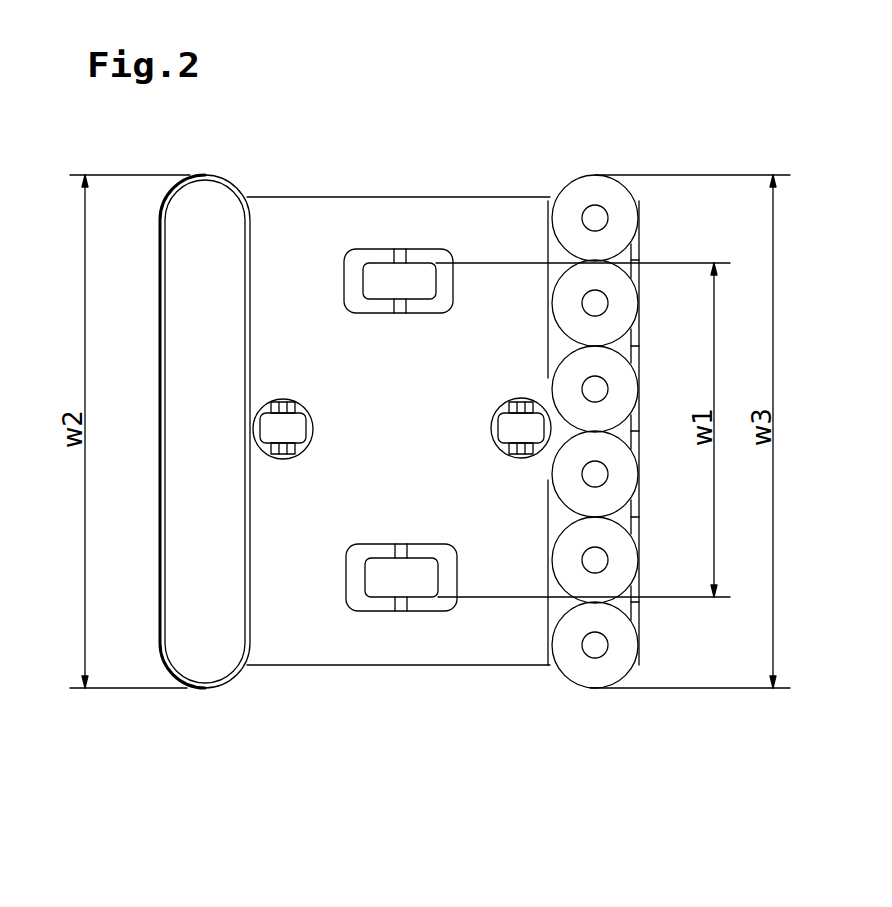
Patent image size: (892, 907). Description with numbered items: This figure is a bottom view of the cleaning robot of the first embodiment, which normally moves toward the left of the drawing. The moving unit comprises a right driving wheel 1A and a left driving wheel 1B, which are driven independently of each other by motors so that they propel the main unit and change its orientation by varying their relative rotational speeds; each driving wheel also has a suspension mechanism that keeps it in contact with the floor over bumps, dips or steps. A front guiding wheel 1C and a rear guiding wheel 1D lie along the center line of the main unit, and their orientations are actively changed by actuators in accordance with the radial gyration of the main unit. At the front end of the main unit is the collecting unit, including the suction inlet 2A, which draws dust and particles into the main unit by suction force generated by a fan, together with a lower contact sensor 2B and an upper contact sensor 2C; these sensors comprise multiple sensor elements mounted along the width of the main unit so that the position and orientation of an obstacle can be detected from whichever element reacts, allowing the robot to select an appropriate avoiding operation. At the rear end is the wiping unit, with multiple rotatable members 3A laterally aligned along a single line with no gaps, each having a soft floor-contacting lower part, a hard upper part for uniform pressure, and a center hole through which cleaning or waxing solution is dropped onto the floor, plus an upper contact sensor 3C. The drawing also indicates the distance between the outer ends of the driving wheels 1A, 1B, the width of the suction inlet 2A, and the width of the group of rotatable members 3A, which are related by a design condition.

The right driving wheel 1A is at (415, 588).
The left driving wheel 1B is at (402, 277).
The front guiding wheel 1C is at (295, 435).
The rear guiding wheel 1D is at (535, 435).
The suction inlet 2A is at (189, 475).
The lower contact sensor 2B is at (160, 246).
The upper contact sensor 2C is at (170, 431).
The rotatable members 3A is at (608, 667).
The upper contact sensor 3C is at (638, 252).